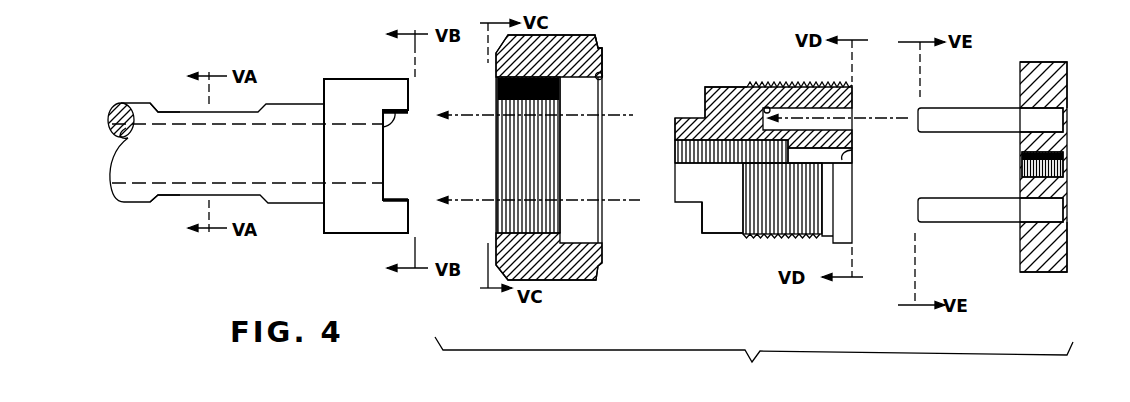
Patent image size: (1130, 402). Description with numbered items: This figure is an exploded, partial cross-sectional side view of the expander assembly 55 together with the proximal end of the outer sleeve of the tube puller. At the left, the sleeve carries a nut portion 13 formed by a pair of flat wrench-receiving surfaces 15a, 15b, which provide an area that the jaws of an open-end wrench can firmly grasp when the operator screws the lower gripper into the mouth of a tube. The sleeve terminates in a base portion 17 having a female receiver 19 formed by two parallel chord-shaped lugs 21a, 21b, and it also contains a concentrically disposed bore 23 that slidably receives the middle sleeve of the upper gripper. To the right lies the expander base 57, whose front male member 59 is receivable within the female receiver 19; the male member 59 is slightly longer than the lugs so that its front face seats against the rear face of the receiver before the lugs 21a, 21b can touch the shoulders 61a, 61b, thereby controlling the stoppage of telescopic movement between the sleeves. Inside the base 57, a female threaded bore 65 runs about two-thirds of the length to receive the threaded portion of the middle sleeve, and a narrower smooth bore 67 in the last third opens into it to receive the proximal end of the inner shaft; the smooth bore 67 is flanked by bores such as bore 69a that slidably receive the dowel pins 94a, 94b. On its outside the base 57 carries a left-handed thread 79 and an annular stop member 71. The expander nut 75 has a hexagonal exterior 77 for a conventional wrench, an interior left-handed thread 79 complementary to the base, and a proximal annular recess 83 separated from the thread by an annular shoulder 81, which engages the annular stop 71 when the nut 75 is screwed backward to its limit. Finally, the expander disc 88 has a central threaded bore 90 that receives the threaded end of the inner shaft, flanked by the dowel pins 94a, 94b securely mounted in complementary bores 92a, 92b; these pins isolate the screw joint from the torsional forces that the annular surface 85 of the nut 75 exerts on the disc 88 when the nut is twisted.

The nut portion 13 is at (237, 133).
The wrench-receiving surface 15a is at (168, 112).
The wrench-receiving surface 15b is at (170, 197).
The base portion 17 is at (337, 92).
The female receiver 19 is at (396, 117).
The chord-shaped lug 21a is at (411, 93).
The chord-shaped lug 21b is at (411, 208).
The bore 23 is at (122, 140).
The expander assembly 55 is at (754, 364).
The expander base 57 is at (852, 103).
The male member 59 is at (700, 117).
The shoulder 61a is at (708, 62).
The shoulder 61b is at (686, 205).
The female threaded bore 65 is at (680, 152).
The smooth bore 67 is at (851, 153).
The bore 69a is at (766, 107).
The annular stop member 71 is at (838, 82).
The expander nut 75 is at (562, 50).
The hexagonal exterior 77 is at (595, 40).
The left-handed thread 79 is at (493, 95).
The annular shoulder 81 is at (564, 77).
The annular recess 83 is at (603, 75).
The annular surface 85 is at (605, 53).
The expander disc 88 is at (1042, 63).
The threaded bore 90 is at (1063, 160).
The bore 92a is at (1048, 100).
The bore 92b is at (1062, 240).
The dowel pin 94a is at (1067, 118).
The dowel pin 94b is at (1048, 208).